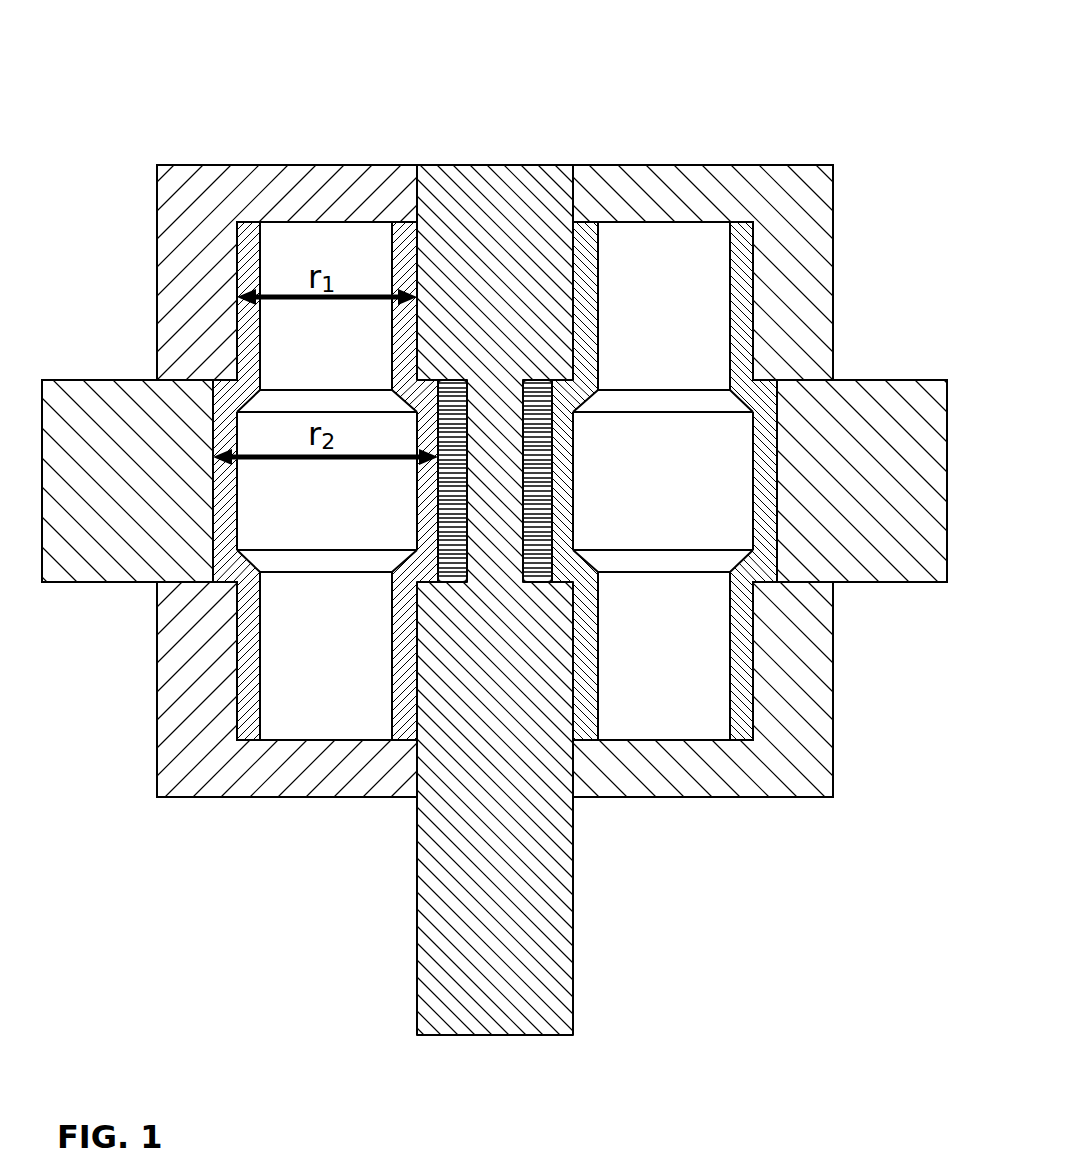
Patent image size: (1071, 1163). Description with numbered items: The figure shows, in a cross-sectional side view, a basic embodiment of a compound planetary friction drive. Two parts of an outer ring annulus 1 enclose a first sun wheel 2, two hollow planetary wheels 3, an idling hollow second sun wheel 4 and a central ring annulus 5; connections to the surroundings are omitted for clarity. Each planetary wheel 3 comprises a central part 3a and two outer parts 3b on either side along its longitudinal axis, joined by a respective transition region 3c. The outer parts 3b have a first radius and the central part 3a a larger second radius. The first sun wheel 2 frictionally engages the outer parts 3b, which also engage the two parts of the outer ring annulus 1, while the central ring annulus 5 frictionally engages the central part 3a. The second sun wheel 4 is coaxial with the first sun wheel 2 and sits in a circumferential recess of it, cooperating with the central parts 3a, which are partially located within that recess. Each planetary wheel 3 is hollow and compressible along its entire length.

The outer ring annulus 1 is at (295, 192).
The first sun wheel 2 is at (535, 1002).
The hollow planetary wheel 3 is at (315, 500).
The central part 3a is at (228, 513).
The outer part 3b is at (248, 277).
The transition region 3c is at (240, 393).
The idling hollow second sun wheel 4 is at (456, 445).
The central ring annulus 5 is at (58, 522).